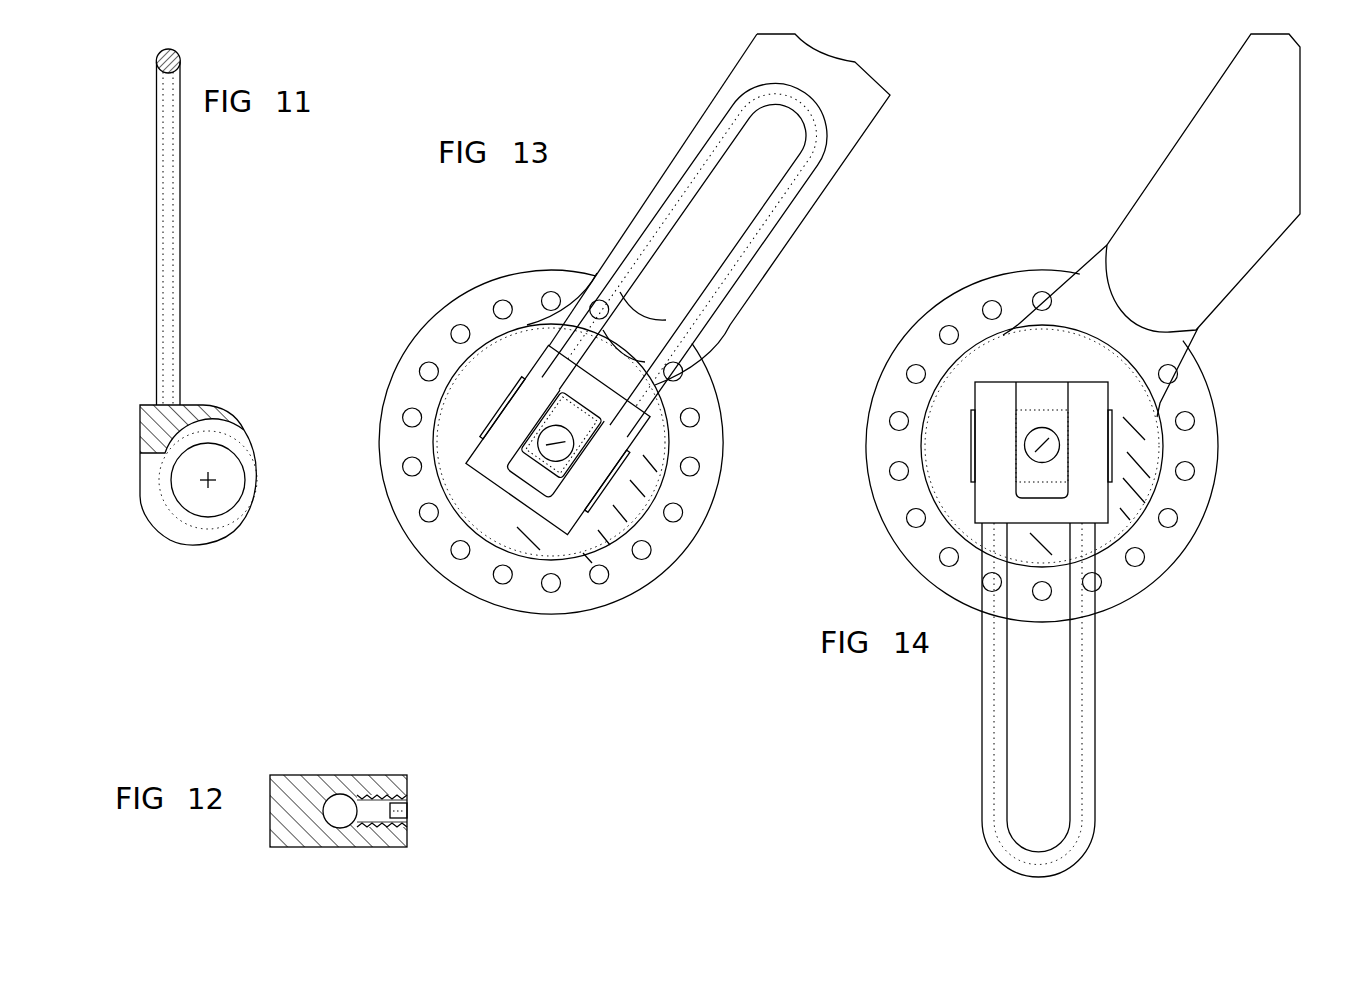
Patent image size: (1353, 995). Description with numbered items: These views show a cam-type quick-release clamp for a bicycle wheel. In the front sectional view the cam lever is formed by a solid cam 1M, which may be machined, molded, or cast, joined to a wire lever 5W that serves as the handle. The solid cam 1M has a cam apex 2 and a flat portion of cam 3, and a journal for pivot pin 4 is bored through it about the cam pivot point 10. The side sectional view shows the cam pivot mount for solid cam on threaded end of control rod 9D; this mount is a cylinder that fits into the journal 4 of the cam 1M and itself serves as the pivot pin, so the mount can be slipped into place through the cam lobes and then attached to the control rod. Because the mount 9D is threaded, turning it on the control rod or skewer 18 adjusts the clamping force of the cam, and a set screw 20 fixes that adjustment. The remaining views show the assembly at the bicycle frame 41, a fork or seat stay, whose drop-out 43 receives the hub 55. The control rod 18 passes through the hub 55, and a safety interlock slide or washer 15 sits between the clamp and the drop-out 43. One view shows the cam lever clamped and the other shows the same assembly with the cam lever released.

In FIG. 11, the solid cam 1M is at (205, 546).
In FIG. 13, the solid cam 1M is at (570, 540).
In FIG. 14, the solid cam 1M is at (1097, 427).
In FIG. 11, the cam apex 2 is at (140, 508).
In FIG. 11, the flat portion of cam 3 is at (140, 481).
In FIG. 11, the journal for pivot pin 4 is at (226, 462).
In FIG. 11, the cam pivot point 10 is at (210, 483).
In FIG. 11, the wire lever 5W is at (180, 178).
In FIG. 13, the wire lever 5W is at (673, 200).
In FIG. 14, the wire lever 5W is at (988, 744).
In FIG. 12, the cam pivot mount for solid cam on threaded end of control rod 9D is at (302, 745).
In FIG. 13, the cam pivot mount for solid cam on threaded end of control rod 9D is at (535, 473).
In FIG. 14, the cam pivot mount for solid cam on threaded end of control rod 9D is at (1033, 408).
In FIG. 13, the safety interlock slide or washer 15 is at (655, 443).
In FIG. 14, the safety interlock slide or washer 15 is at (932, 487).
In FIG. 13, the control rod or skewer 18 is at (552, 438).
In FIG. 14, the control rod or skewer 18 is at (1025, 449).
In FIG. 12, the set screw 20 is at (408, 808).
In FIG. 13, the bicycle frame (fork or seat stay) 41 is at (727, 78).
In FIG. 14, the bicycle frame (fork or seat stay) 41 is at (1264, 141).
In FIG. 13, the drop-out 43 is at (632, 337).
In FIG. 14, the drop-out 43 is at (1170, 351).
In FIG. 13, the hub 55 is at (491, 276).
In FIG. 14, the hub 55 is at (980, 283).